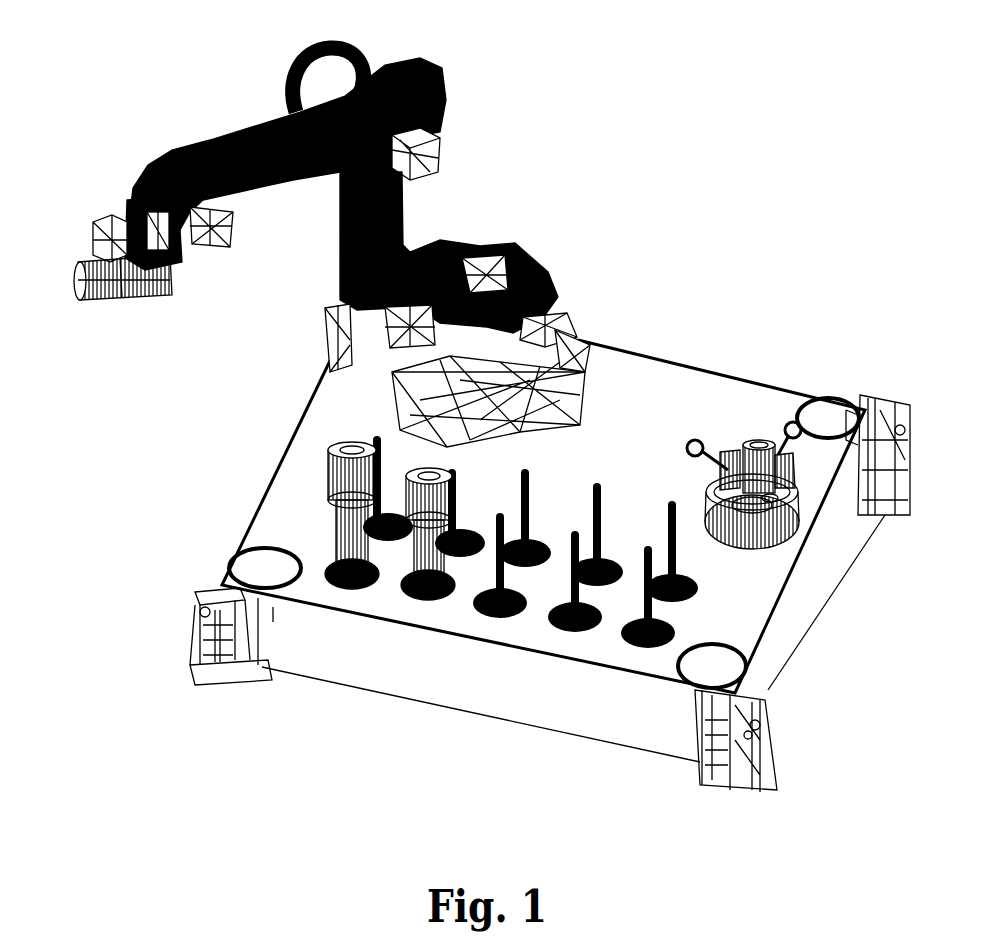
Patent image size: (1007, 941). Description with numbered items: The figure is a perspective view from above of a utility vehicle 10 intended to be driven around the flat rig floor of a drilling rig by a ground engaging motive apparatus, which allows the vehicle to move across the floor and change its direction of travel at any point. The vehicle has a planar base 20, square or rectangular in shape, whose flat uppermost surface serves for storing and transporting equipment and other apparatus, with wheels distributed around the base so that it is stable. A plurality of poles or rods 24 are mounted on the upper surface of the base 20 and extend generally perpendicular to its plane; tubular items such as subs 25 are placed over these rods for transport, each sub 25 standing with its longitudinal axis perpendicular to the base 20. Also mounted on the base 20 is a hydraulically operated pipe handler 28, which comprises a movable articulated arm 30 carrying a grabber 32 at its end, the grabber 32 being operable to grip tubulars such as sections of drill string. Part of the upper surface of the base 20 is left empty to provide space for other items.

The utility vehicle 10 is at (633, 308).
The base 20 is at (264, 492).
The poles or rods 24 is at (678, 542).
The subs 25 is at (345, 445).
The pipe handler 28 is at (207, 135).
The articulated arm 30 is at (400, 203).
The grabber 32 is at (112, 300).